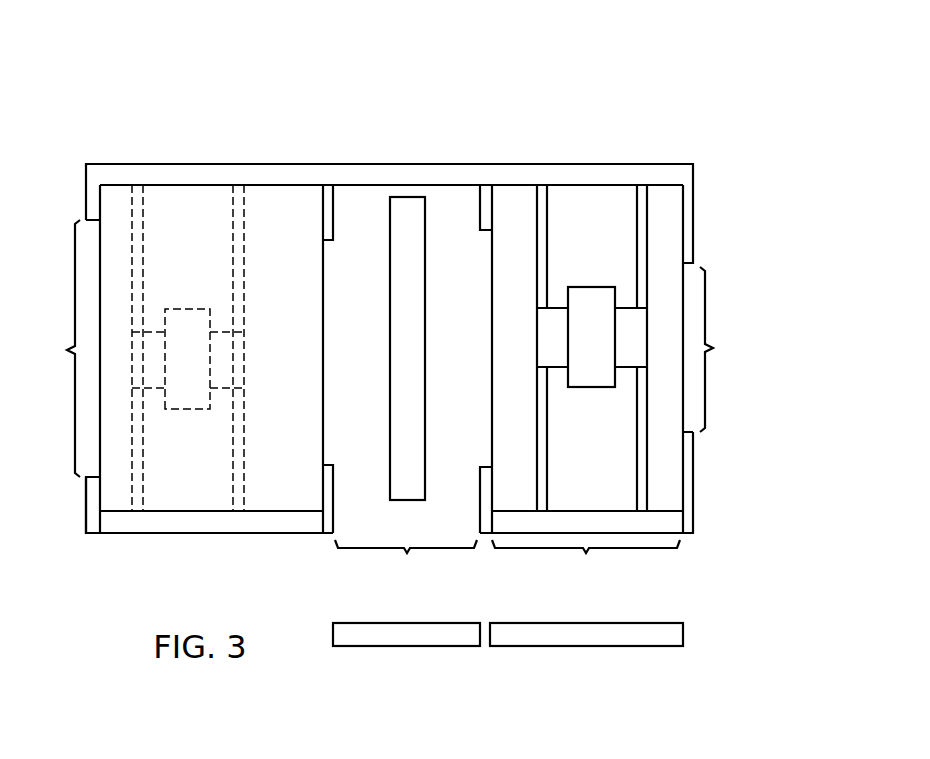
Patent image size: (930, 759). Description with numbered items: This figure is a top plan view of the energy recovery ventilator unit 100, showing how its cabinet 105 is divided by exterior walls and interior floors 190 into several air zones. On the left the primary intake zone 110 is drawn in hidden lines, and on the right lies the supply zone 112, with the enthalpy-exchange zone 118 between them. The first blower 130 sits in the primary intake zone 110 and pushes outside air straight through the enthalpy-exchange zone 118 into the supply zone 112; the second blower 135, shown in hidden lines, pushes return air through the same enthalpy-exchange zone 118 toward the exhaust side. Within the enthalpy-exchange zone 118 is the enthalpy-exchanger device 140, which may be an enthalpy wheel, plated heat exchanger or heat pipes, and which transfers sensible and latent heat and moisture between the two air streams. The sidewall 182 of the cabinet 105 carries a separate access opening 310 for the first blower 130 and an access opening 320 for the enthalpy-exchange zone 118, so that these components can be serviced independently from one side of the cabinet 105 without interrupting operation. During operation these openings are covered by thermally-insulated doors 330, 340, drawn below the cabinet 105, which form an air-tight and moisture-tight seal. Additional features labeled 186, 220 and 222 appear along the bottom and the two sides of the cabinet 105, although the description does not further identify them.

The energy recovery ventilator unit 100 is at (596, 92).
The cabinet 105 is at (685, 147).
The primary intake zone 110 is at (569, 256).
The supply zone 112 is at (208, 267).
The enthalpy-exchange zone 118 is at (377, 365).
The first blower 130 is at (594, 379).
The second blower 135 is at (187, 408).
The enthalpy-exchanger device 140 is at (425, 207).
The sidewall 182 is at (86, 546).
The bottom plate 186 is at (130, 523).
The interior floors 190 is at (516, 203).
The right side cover 220 is at (731, 349).
The left side cover 222 is at (47, 348).
The access opening 310 is at (586, 564).
The access opening 320 is at (406, 564).
The thermally-insulated door 330 is at (650, 636).
The thermally-insulated door 340 is at (449, 636).